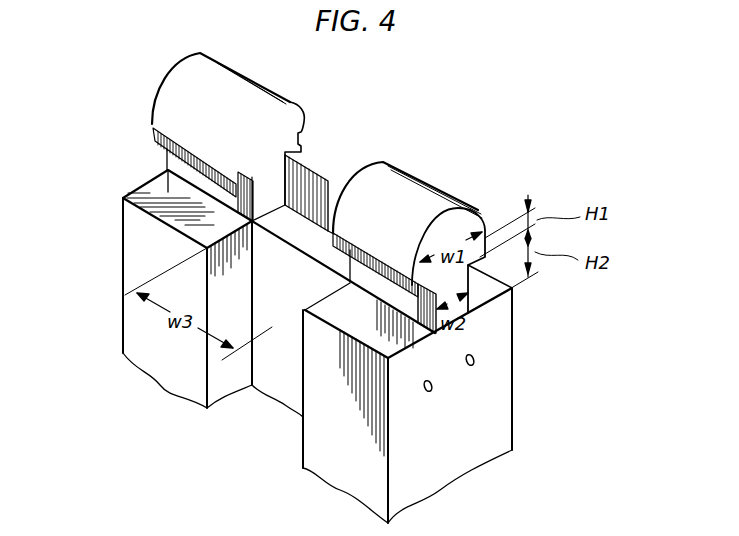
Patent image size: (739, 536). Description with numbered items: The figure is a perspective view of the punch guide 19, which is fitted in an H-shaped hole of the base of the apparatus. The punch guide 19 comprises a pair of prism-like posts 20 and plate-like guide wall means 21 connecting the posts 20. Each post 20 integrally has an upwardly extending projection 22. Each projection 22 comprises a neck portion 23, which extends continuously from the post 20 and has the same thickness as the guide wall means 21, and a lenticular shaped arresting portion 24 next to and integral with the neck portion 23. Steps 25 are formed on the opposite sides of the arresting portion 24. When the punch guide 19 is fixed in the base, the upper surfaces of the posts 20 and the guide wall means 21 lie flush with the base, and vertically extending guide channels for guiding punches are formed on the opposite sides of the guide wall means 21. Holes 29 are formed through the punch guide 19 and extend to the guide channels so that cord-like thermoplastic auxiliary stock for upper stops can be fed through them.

The punch guide 19 is at (133, 172).
The prism-like post 20 is at (122, 251).
The guide wall means 21 is at (295, 368).
The projection 22 is at (303, 121).
The neck portion 23 is at (282, 178).
The arresting portion 24 is at (290, 110).
The step 25 is at (306, 139).
The hole 29 is at (430, 392).